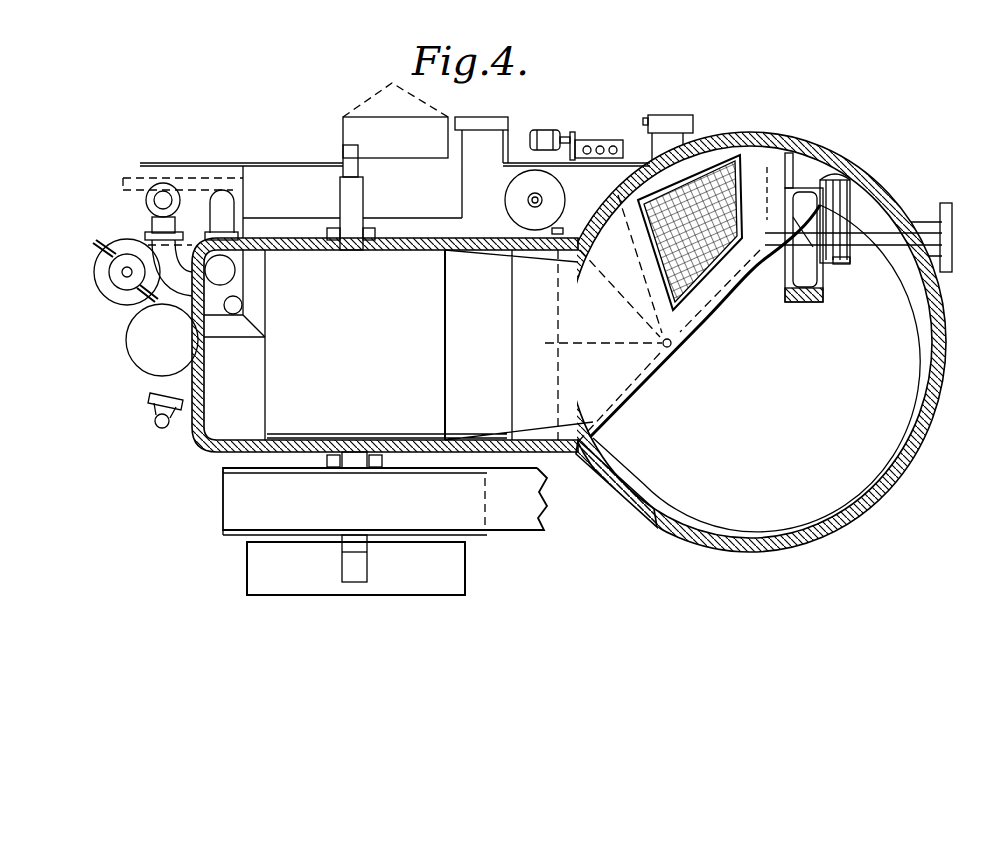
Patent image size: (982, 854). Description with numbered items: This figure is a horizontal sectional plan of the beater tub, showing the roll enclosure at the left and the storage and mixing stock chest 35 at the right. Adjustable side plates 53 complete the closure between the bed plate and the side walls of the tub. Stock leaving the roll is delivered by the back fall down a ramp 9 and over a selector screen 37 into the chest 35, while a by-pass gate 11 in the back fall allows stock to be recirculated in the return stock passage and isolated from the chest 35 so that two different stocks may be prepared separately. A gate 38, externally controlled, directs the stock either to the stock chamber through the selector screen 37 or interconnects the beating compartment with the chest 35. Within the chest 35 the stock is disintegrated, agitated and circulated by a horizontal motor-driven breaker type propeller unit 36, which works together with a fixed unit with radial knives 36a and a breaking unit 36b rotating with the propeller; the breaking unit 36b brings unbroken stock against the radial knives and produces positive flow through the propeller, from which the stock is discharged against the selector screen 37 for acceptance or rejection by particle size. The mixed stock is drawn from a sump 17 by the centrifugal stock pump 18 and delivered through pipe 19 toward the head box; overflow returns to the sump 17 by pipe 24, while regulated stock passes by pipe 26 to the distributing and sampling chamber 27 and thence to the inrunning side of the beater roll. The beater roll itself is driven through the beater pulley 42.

The ramp 9 is at (698, 319).
The by-pass gate 11 is at (429, 345).
The sump 17 is at (234, 293).
The centrifugal stock pump 18 is at (108, 270).
The pipe 19 is at (146, 201).
The pipe 24 is at (226, 208).
The pipe 26 is at (160, 427).
The distributing and sampling chamber 27 is at (162, 340).
The storage and mixing stock chest 35 is at (770, 537).
The propeller unit 36 is at (850, 243).
The fixed unit with radial knives 36a is at (840, 288).
The breaking unit 36b is at (853, 283).
The selector screen 37 is at (703, 260).
The gate 38 is at (597, 344).
The beater pulley 42 is at (385, 531).
The adjustable side plates 53 is at (325, 250).